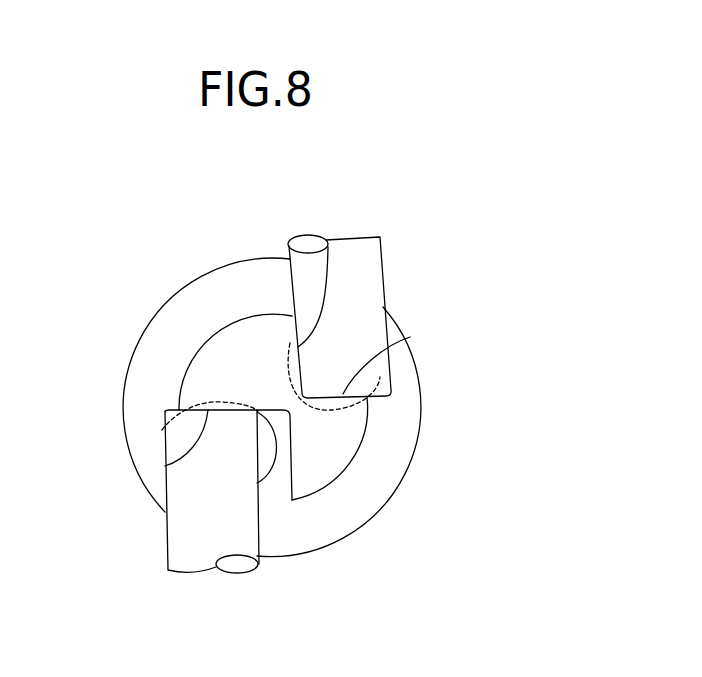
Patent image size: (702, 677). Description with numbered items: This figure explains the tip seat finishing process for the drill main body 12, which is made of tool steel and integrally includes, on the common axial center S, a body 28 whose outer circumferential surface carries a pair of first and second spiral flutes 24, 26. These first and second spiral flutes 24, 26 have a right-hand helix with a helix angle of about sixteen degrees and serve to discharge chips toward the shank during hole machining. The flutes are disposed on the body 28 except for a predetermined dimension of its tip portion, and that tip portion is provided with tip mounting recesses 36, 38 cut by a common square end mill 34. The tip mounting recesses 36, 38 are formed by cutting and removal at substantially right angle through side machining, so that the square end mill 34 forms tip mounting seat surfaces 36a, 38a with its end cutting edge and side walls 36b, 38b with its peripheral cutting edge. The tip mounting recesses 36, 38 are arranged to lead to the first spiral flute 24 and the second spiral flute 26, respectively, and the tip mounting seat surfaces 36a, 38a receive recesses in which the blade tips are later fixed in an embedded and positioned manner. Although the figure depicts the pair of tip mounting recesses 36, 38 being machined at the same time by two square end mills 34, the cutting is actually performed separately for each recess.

The drill main body 12 is at (250, 399).
The first spiral flute 24 is at (162, 430).
The second spiral flute 26 is at (380, 377).
The body 28 is at (332, 445).
The square end mill 34 is at (278, 406).
The tip mounting recess 36 is at (201, 509).
The tip mounting seat surface 36a is at (165, 466).
The side wall 36b is at (282, 472).
The tip mounting recess 38 is at (380, 294).
The tip mounting seat surface 38a is at (410, 337).
The side wall 38b is at (327, 243).
The axial center S is at (274, 406).